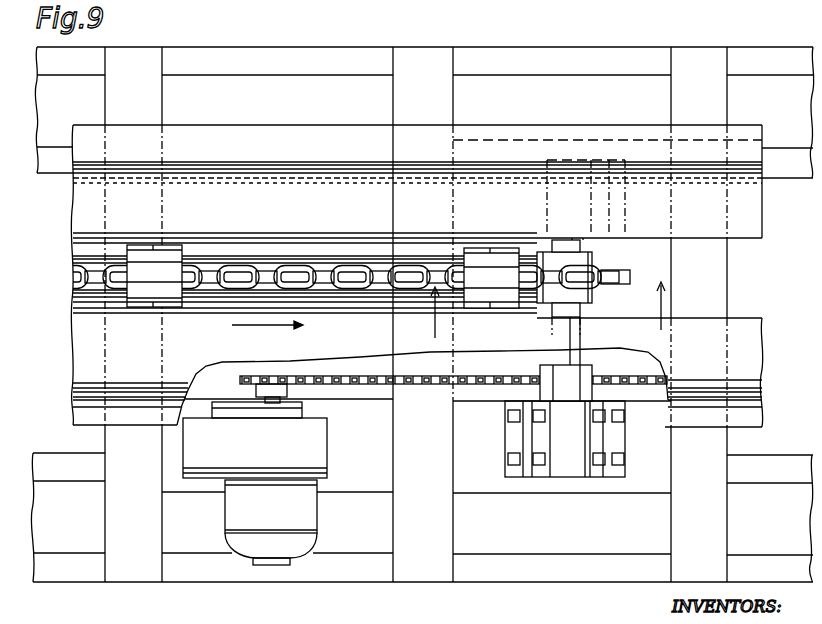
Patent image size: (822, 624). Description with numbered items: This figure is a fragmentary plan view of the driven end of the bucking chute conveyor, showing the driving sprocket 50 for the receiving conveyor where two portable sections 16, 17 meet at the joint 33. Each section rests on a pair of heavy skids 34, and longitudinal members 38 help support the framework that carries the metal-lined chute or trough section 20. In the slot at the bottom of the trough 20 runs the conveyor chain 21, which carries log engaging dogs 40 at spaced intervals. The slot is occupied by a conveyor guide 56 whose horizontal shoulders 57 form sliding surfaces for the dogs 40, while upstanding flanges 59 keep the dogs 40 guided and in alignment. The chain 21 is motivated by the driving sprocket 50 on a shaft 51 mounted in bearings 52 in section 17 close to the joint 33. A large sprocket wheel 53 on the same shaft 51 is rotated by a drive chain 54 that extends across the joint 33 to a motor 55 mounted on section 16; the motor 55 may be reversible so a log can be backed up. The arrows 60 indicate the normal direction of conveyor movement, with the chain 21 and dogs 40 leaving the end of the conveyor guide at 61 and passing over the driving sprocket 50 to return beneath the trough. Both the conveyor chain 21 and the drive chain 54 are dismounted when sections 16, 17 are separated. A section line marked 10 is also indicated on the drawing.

The direction arrow 10 is at (553, 313).
The section 16 is at (327, 582).
The section 17 is at (474, 583).
The chute or trough section 20 is at (745, 324).
The conveyor chain 21 is at (295, 266).
The joint 33 is at (393, 568).
The skids 34 is at (344, 51).
The longitudinal members 38 is at (477, 86).
The log engaging dogs 40 is at (170, 251).
The driving sprocket 50 is at (678, 305).
The shaft 51 is at (580, 309).
The bearings 52 is at (572, 470).
The large sprocket wheel 53 is at (598, 368).
The drive chain 54 is at (428, 388).
The motor 55 is at (313, 519).
The conveyor guide 56 is at (78, 262).
The horizontal shoulders 57 is at (82, 248).
The upstanding flanges 59 is at (82, 316).
The arrows 60 is at (264, 332).
The end of the conveyor guide 61 is at (505, 311).